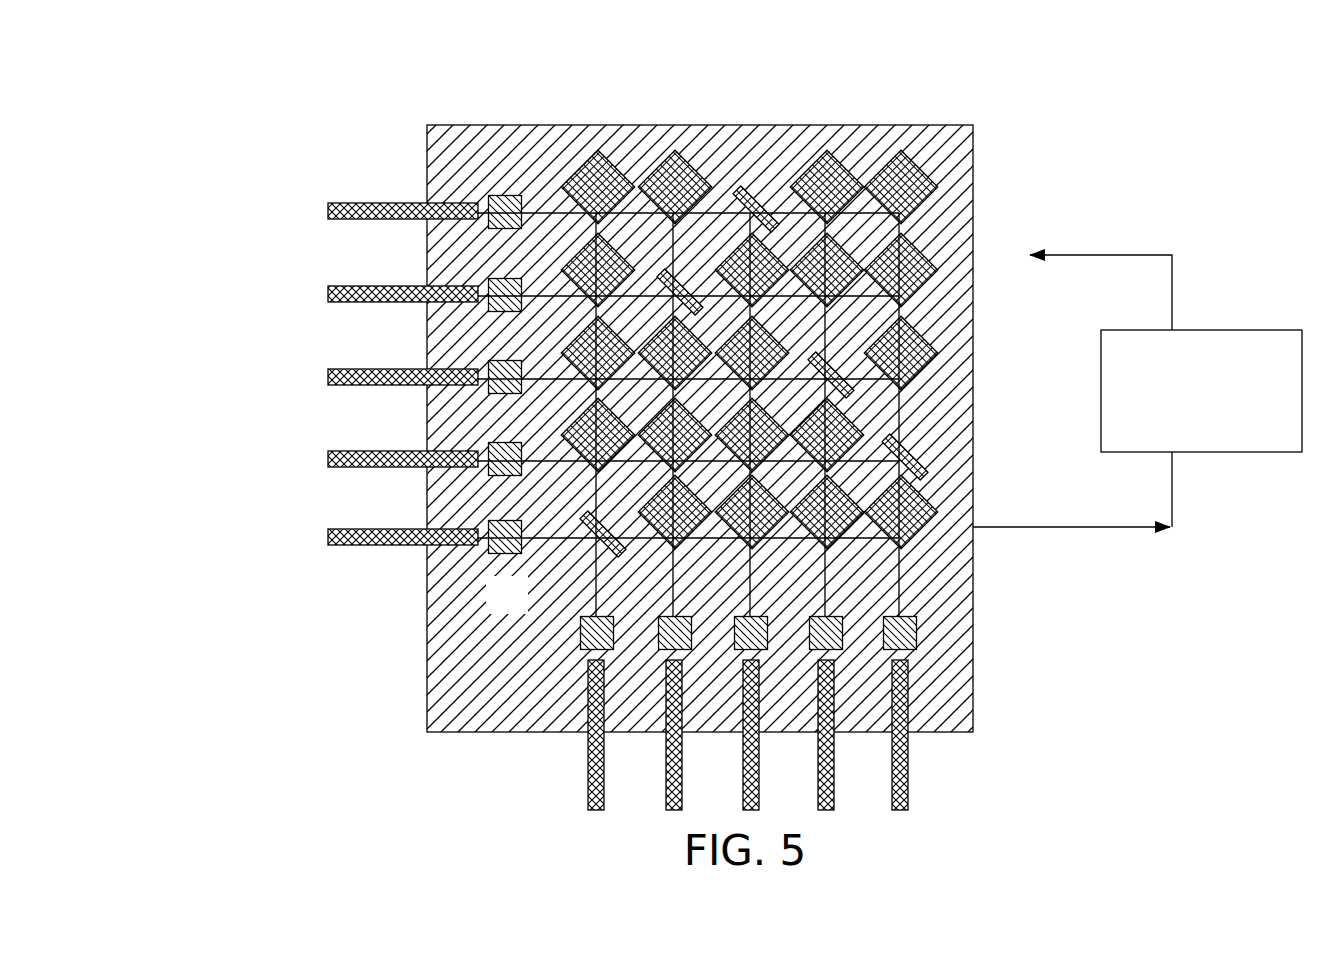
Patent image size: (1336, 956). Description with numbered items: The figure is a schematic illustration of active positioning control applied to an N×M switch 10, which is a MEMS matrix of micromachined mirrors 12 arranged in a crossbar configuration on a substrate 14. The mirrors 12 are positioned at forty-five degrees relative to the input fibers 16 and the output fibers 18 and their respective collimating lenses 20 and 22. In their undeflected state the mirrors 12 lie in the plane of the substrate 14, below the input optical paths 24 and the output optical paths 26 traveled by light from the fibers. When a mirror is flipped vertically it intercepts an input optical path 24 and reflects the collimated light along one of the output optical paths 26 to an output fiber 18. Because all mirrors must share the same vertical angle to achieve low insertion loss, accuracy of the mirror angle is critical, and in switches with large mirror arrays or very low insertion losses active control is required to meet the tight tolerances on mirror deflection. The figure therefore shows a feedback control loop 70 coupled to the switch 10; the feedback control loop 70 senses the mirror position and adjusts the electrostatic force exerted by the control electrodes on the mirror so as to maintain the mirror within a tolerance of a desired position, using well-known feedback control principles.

The N×M switch 10 is at (751, 417).
The micromachined mirrors 12 is at (755, 197).
The substrate 14 is at (524, 610).
The input fibers 16 is at (374, 202).
The output fibers 18 is at (588, 765).
The collimating lenses of the input fibers 20 is at (505, 196).
The collimating lenses of the output fibers 22 is at (581, 633).
The input optical paths 24 is at (553, 213).
The output optical paths 26 is at (897, 418).
The feedback control loop 70 is at (1218, 453).